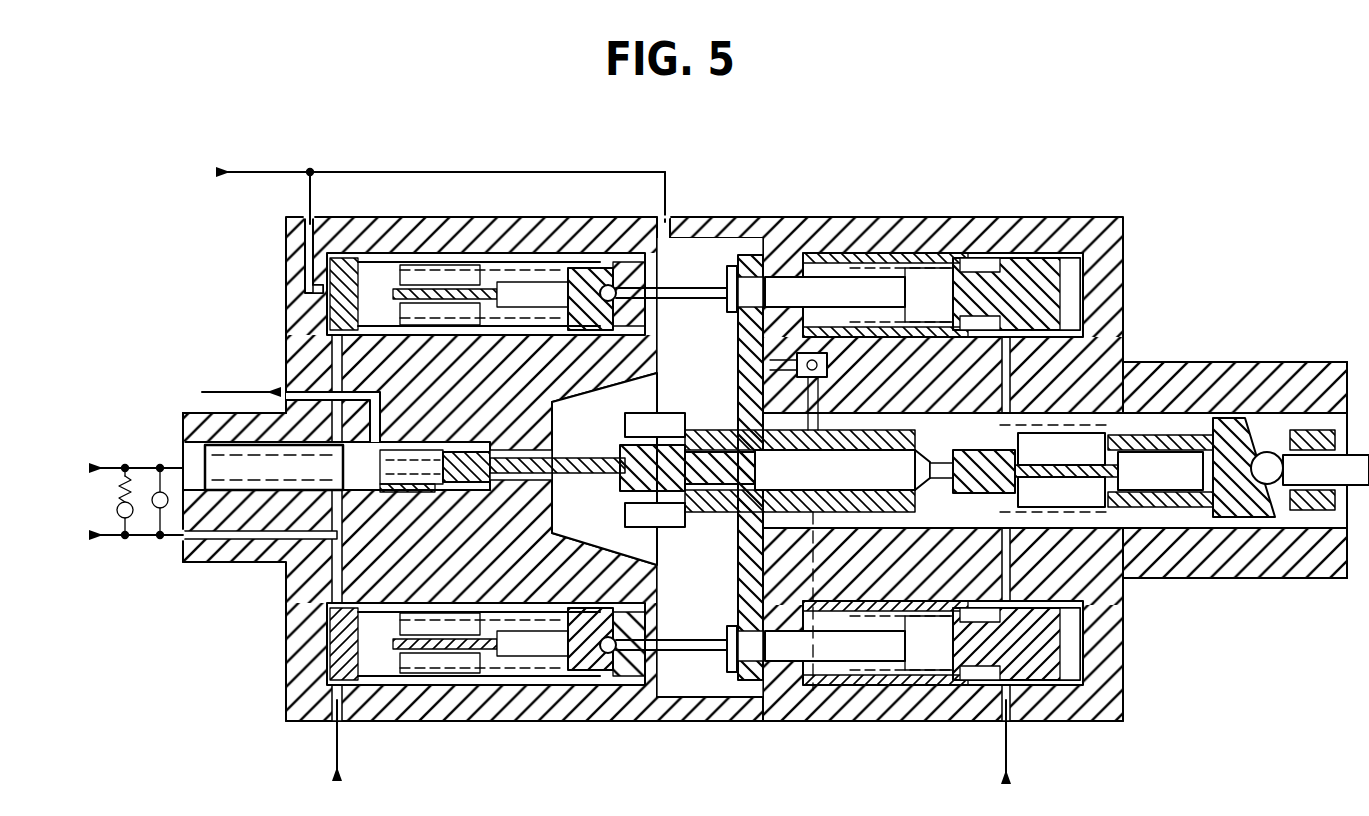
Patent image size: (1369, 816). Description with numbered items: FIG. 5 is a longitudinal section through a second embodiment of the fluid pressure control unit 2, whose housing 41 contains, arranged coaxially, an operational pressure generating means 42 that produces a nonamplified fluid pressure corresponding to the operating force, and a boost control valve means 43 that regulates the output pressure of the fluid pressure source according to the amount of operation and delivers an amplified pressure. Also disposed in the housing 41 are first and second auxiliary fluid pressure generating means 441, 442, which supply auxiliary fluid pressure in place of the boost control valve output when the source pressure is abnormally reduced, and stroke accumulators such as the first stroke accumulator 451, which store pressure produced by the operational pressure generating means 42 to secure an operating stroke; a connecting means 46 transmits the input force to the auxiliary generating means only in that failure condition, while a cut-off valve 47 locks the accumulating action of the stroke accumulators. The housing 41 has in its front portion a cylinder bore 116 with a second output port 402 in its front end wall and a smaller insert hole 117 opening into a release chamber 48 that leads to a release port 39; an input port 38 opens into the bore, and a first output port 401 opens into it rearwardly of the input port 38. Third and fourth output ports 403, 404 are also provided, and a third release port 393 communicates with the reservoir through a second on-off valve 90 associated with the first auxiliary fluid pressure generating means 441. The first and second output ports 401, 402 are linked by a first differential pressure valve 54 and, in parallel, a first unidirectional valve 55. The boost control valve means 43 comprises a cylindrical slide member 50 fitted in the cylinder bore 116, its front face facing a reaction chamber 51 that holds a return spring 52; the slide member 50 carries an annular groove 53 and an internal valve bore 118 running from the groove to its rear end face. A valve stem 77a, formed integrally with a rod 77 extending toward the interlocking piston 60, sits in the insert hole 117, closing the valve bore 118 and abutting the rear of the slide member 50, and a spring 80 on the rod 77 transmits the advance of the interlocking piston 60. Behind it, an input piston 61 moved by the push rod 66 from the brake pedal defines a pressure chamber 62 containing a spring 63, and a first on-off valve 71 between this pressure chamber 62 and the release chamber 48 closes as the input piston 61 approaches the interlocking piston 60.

The fluid pressure control unit 2 is at (808, 215).
The input port 38 is at (312, 380).
The release port 39 is at (675, 218).
The third release port 393 is at (318, 236).
The first output port 401 is at (200, 560).
The second output port 402 is at (203, 440).
The third output port 403 is at (344, 690).
The fourth output port 404 is at (1010, 695).
The housing 41 is at (700, 714).
The operational pressure generating means 42 is at (1093, 538).
The boost control valve means 43 is at (484, 500).
The first auxiliary fluid pressure generating means 441 is at (449, 254).
The second auxiliary fluid pressure generating means 442 is at (510, 690).
The first stroke accumulator 451 is at (941, 254).
The connecting means 46 is at (746, 346).
The cut-off valve 47 is at (830, 366).
The release chamber 48 is at (704, 600).
The slide member 50 is at (413, 447).
The reaction chamber 51 is at (227, 457).
The return spring 52 is at (345, 490).
The annular groove 53 is at (437, 496).
The first differential pressure valve 54 is at (143, 480).
The first unidirectional valve 55 is at (157, 510).
The interlocking piston 60 is at (892, 508).
The input piston 61 is at (1233, 440).
The pressure chamber 62 is at (1058, 507).
The spring 63 is at (1152, 433).
The push rod 66 is at (1312, 460).
The first on-off valve 71 is at (1033, 440).
The rod 77 is at (622, 474).
The valve stem 77a is at (585, 438).
The spring 80 is at (732, 414).
The second on-off valve 90 is at (305, 297).
The cylinder bore 116 is at (258, 478).
The insert hole 117 is at (500, 455).
The valve bore 118 is at (461, 450).